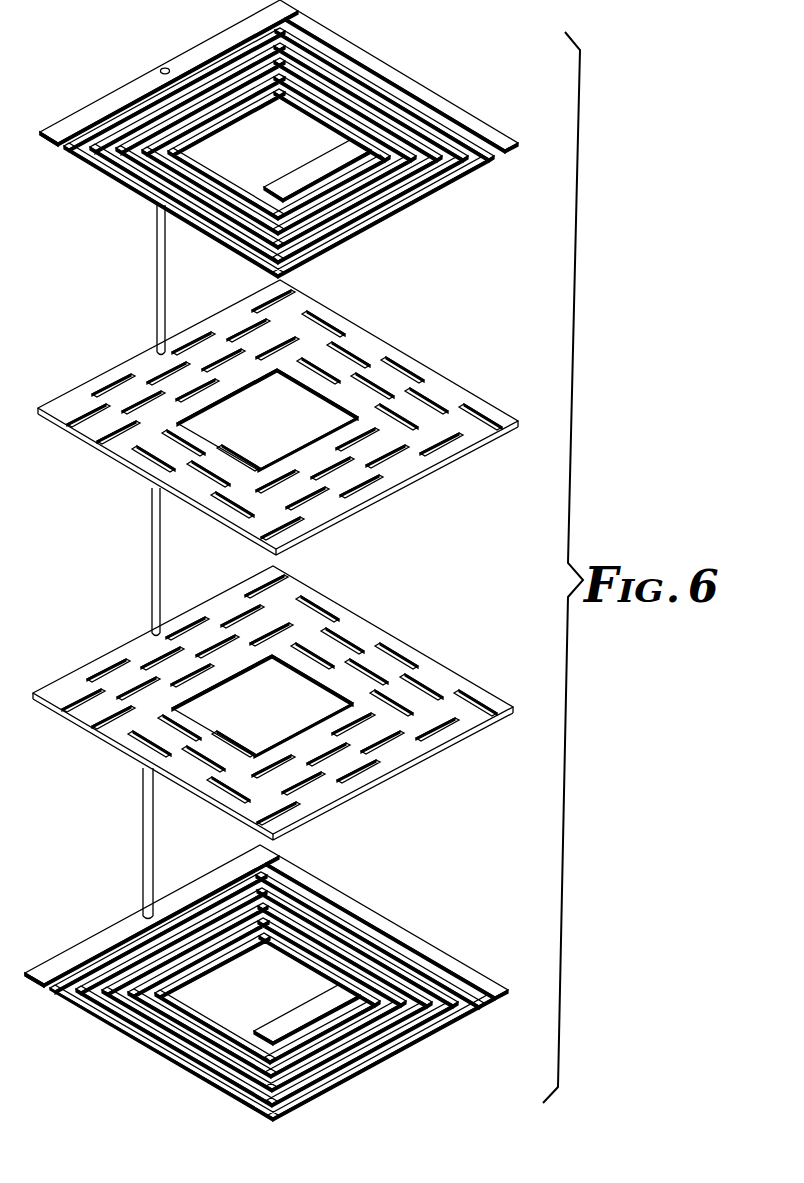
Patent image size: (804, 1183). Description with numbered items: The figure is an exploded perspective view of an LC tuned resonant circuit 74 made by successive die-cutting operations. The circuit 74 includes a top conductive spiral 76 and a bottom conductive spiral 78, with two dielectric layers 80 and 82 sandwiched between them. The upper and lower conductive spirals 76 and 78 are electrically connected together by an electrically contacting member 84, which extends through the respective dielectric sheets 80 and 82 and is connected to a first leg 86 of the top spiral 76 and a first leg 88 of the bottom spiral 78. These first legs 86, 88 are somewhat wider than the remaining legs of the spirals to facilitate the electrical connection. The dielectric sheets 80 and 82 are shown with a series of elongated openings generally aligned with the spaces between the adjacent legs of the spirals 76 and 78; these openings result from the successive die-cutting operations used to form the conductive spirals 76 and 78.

The circuit 74 is at (64, 96).
The top conductive spiral 76 is at (410, 78).
The bottom conductive spiral 78 is at (403, 928).
The dielectric layer 80 is at (126, 362).
The dielectric layer 82 is at (100, 657).
The electrically contacting member 84 is at (155, 246).
The first leg 86 is at (224, 38).
The first leg 88 is at (108, 932).